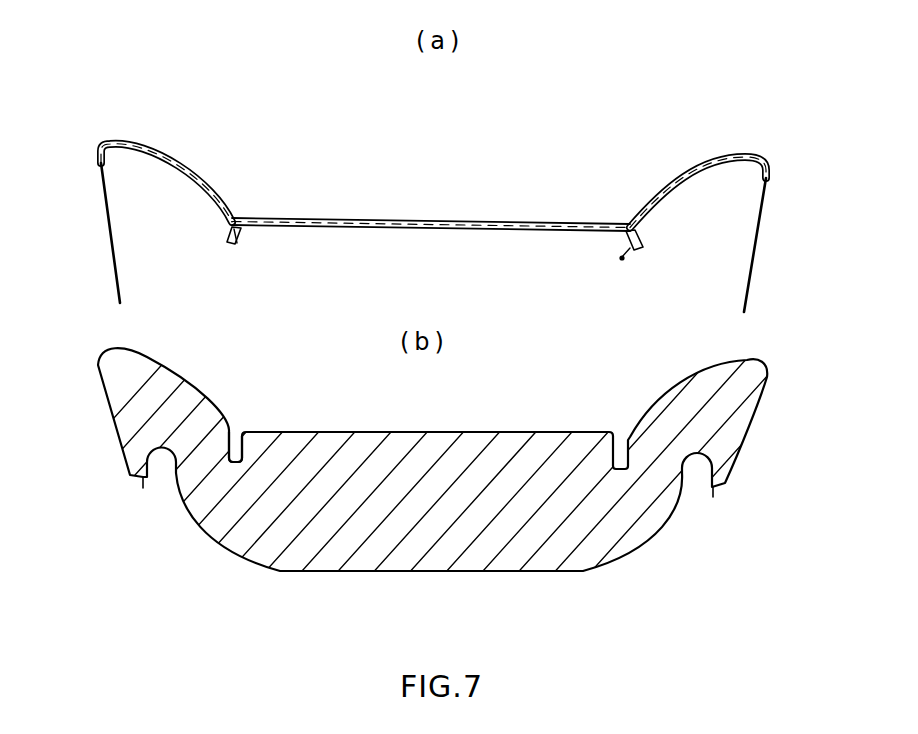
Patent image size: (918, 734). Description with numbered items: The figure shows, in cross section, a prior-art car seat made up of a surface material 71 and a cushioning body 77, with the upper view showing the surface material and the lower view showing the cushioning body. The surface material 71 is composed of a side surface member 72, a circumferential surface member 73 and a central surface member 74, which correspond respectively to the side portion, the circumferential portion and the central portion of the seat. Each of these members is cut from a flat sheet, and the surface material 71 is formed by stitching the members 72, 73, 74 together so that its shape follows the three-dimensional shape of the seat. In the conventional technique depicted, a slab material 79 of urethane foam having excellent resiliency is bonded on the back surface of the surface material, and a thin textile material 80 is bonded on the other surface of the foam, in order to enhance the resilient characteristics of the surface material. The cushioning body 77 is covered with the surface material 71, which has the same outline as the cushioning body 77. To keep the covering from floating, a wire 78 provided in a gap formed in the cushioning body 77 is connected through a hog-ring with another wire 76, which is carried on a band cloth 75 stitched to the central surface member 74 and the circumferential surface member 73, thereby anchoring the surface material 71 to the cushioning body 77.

The surface material 71 is at (407, 170).
The side surface member 72 is at (103, 210).
The circumferential surface member 73 is at (183, 155).
The central surface member 74 is at (431, 200).
The band cloth 75 is at (245, 244).
The wire 76 is at (243, 251).
The cushioning body 77 is at (459, 467).
The wire 78 is at (247, 463).
The slab material 79 is at (371, 217).
The thin textile material 80 is at (402, 230).